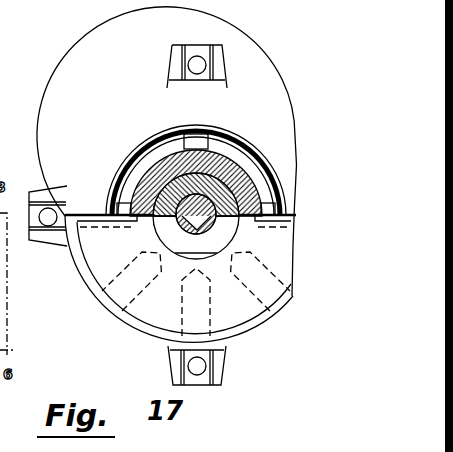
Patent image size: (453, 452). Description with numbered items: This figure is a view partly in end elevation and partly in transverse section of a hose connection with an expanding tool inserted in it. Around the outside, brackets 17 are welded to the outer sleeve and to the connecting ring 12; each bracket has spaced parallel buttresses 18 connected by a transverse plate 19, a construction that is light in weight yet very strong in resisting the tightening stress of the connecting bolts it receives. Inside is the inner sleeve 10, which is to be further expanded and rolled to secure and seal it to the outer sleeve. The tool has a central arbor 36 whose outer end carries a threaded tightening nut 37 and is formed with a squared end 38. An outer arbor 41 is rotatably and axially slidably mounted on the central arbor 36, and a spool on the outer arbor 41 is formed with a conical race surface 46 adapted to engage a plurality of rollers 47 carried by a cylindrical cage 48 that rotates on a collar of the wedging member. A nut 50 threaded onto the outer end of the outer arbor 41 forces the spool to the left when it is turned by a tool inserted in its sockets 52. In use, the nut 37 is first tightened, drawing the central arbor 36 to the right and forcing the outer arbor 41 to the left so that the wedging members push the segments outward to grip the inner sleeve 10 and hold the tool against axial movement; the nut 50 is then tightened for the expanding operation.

The inner sleeve 10 is at (133, 150).
The connecting ring 12 is at (133, 106).
The bracket 17 is at (203, 45).
The buttress 18 is at (196, 78).
The transverse plate 19 is at (226, 73).
The central arbor 36 is at (186, 258).
The tightening nut 37 is at (203, 229).
The squared end 38 is at (213, 223).
The outer arbor 41 is at (168, 199).
The conical race surface 46 is at (141, 228).
The rollers 47 is at (203, 127).
The cylindrical cage 48 is at (254, 146).
The nut 50 is at (158, 326).
The sockets 52 is at (102, 310).